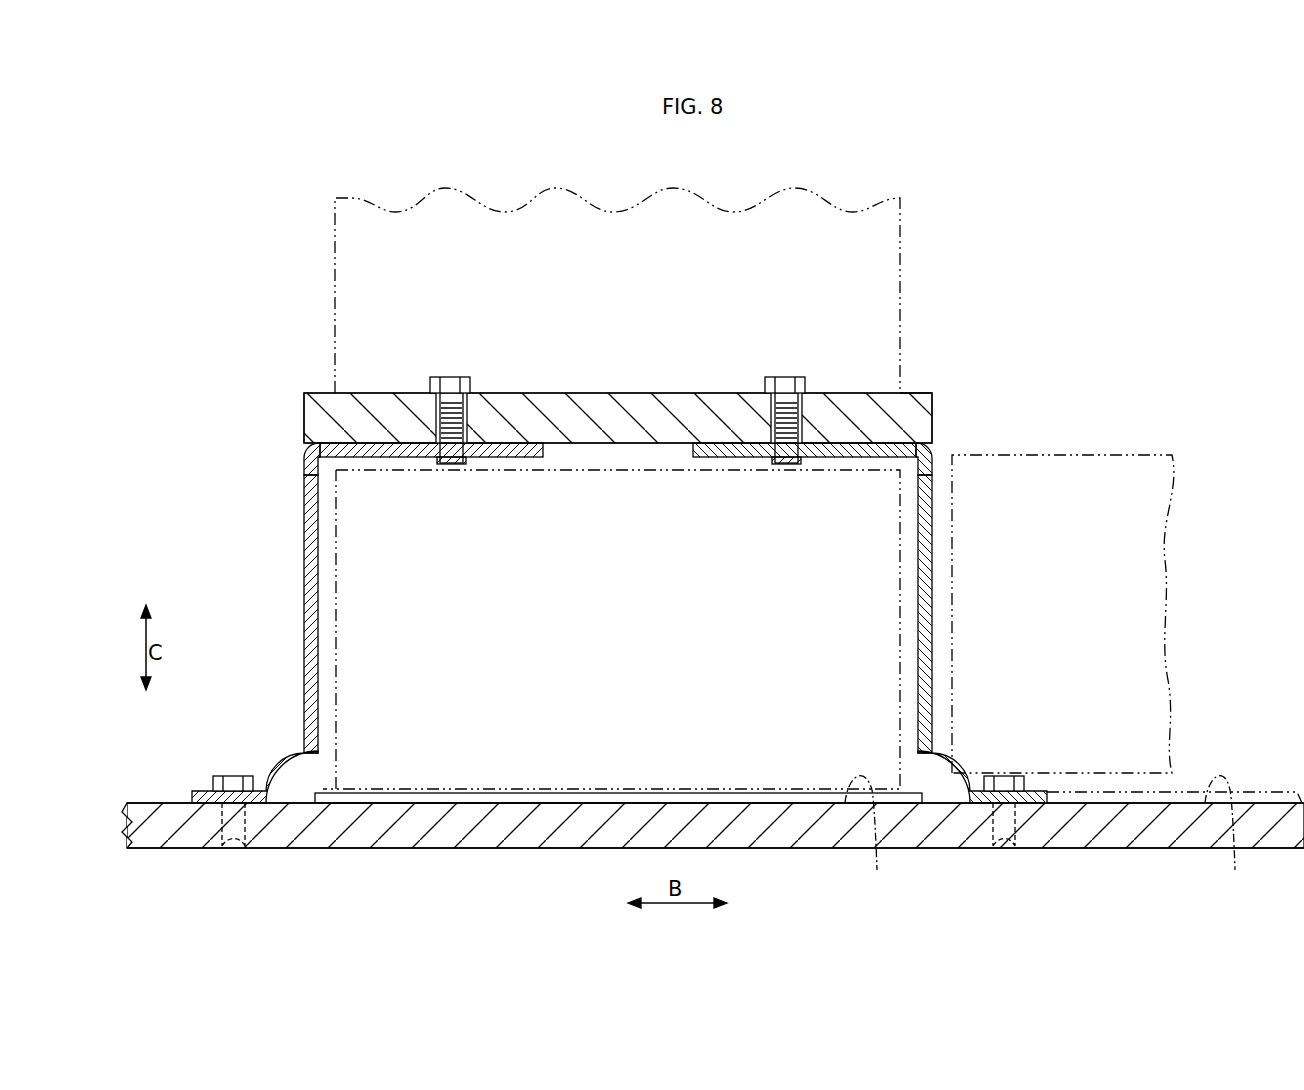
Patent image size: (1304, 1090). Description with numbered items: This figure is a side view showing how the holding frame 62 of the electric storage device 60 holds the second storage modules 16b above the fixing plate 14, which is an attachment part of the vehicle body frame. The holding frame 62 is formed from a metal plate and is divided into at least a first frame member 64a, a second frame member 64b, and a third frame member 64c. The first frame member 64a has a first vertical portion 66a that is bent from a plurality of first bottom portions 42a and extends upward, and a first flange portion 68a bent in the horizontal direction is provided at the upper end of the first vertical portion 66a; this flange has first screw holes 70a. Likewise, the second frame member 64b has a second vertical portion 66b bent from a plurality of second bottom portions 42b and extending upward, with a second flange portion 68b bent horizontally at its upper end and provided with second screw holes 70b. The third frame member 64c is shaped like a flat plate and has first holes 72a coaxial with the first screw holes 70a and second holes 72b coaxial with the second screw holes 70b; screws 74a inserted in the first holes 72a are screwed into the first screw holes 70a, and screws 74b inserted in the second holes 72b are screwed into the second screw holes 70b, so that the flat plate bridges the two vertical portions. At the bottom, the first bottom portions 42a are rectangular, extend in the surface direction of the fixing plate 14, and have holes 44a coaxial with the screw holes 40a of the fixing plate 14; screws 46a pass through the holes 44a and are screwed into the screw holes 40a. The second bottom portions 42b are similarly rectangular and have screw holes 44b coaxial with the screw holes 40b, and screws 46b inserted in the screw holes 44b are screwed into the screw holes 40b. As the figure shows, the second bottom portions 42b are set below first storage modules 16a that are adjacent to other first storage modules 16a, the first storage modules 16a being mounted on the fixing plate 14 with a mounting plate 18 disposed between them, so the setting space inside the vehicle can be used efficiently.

The fixing plate 14 is at (418, 850).
The first storage module 16a is at (334, 566).
The second storage module 16b is at (334, 303).
The mounting plate 18 is at (1045, 838).
The screw hole 40a is at (233, 848).
The screw hole 40b is at (1003, 848).
The first bottom portion 42a is at (206, 791).
The second bottom portion 42b is at (985, 791).
The hole 44a is at (212, 800).
The screw hole 44b is at (1020, 797).
The screw 46a is at (236, 777).
The screw 46b is at (1005, 777).
The electric storage device 60 is at (1004, 304).
The holding frame 62 is at (958, 397).
The first frame member 64a is at (302, 464).
The second frame member 64b is at (934, 494).
The third frame member 64c is at (928, 392).
The first vertical portion 66a is at (304, 500).
The second vertical portion 66b is at (932, 530).
The first flange portion 68a is at (500, 458).
The second flange portion 68b is at (735, 458).
The first screw hole 70a is at (442, 450).
The second screw hole 70b is at (794, 450).
The first hole 72a is at (463, 402).
The second hole 72b is at (781, 402).
The screw 74a is at (467, 377).
The screw 74b is at (768, 377).